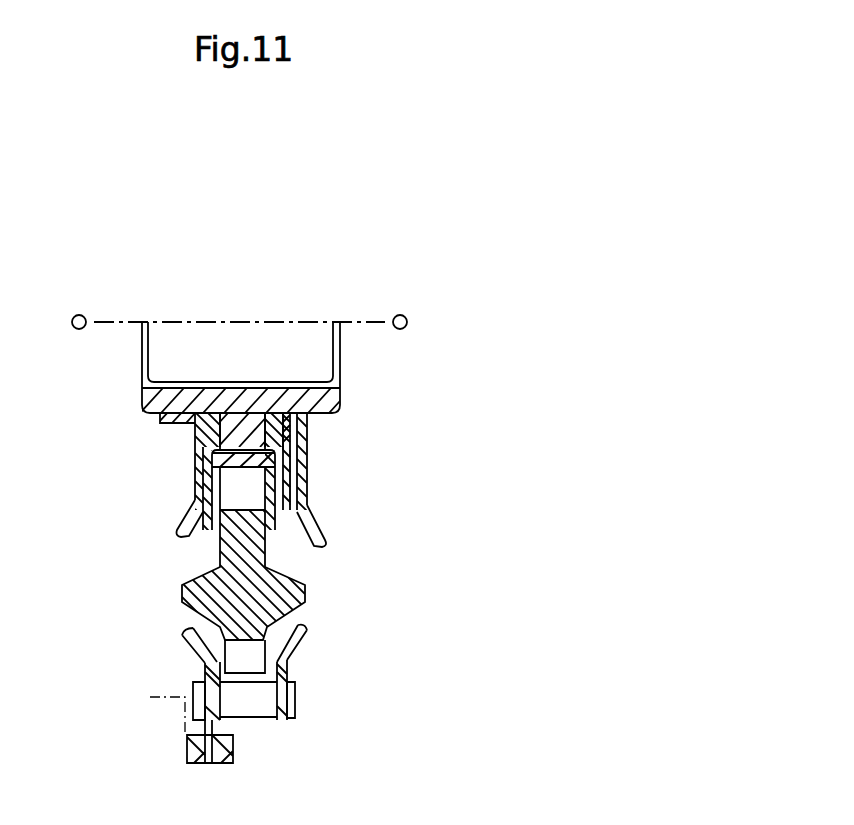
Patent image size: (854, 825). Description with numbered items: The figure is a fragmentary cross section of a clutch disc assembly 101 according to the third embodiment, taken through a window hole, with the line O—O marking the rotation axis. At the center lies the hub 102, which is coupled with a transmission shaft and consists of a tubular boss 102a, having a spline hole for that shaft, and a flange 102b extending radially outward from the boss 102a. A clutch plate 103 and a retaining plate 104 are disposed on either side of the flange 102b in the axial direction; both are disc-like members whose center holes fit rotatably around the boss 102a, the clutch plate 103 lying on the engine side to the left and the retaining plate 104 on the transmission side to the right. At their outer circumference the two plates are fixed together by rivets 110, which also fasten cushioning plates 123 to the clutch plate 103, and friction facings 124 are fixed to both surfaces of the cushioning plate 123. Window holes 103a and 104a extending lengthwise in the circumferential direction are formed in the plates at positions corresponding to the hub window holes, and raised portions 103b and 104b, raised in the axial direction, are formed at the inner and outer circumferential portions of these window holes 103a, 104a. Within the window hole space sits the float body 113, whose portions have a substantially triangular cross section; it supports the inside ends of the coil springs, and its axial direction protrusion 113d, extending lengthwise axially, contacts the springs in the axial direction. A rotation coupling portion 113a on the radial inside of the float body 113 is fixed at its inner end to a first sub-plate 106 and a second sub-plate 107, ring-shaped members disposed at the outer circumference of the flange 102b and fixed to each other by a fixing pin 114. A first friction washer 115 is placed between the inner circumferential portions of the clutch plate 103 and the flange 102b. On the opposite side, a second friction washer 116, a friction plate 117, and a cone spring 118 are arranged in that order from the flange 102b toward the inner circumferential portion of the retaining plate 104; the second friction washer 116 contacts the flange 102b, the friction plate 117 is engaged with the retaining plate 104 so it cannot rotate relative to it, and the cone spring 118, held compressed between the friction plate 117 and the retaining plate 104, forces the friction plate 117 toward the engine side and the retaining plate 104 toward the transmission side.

The clutch disc assembly 101 is at (378, 233).
The hub 102 is at (299, 356).
The tubular boss 102a is at (317, 398).
The flange 102b is at (241, 435).
The clutch plate 103 is at (192, 554).
The window hole 103a is at (193, 623).
The raised portion 103b is at (180, 528).
The retaining plate 104 is at (350, 543).
The window hole 104a is at (308, 626).
The raised portion 104b is at (320, 540).
The first sub-plate 106 is at (227, 530).
The second sub-plate 107 is at (303, 550).
The rivet 110 is at (263, 705).
The float body 113 is at (263, 492).
The rotation coupling portion 113a is at (215, 458).
The axial direction protrusion 113d is at (290, 600).
The fixing pin 114 is at (218, 495).
The first friction washer 115 is at (208, 440).
The second friction washer 116 is at (300, 452).
The friction plate 117 is at (300, 440).
The cone spring 118 is at (300, 470).
The cushioning plate 123 is at (203, 725).
The friction facing 124 is at (197, 752).